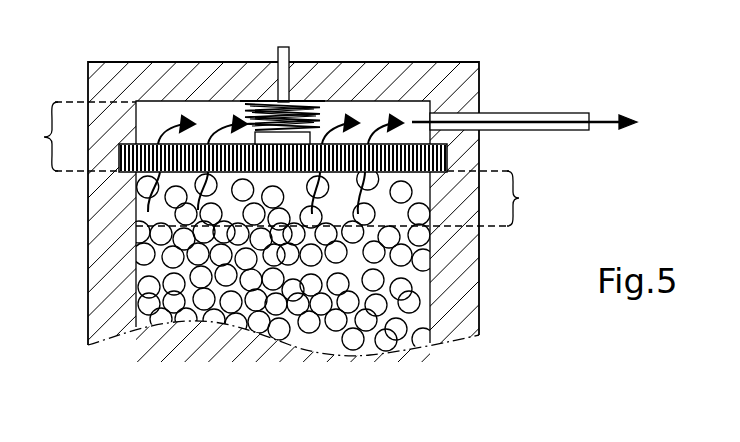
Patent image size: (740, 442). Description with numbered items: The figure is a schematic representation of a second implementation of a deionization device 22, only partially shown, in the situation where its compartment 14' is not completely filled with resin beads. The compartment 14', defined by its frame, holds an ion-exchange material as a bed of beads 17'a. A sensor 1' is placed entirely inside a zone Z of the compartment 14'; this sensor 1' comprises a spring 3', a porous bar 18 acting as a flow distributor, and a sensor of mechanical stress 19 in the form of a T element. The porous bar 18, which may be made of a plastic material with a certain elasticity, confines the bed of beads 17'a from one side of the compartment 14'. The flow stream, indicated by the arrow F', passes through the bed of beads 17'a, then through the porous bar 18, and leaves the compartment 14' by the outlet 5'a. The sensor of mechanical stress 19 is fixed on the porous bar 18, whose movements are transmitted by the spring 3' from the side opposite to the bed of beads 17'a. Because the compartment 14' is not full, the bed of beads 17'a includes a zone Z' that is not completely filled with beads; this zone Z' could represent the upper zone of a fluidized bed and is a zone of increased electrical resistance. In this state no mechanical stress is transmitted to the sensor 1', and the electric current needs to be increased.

The sensor 1' is at (275, 122).
The sensor of mechanical stress 19 is at (284, 55).
The spring 3' is at (311, 87).
The outlet 5'a is at (509, 146).
The flow stream F' is at (524, 133).
The zone Z is at (82, 136).
The porous bar 18 is at (119, 159).
The bed of beads 17'a is at (218, 259).
The compartment 14' is at (370, 212).
The zone Z' is at (339, 198).
The deionization device 22 is at (537, 378).